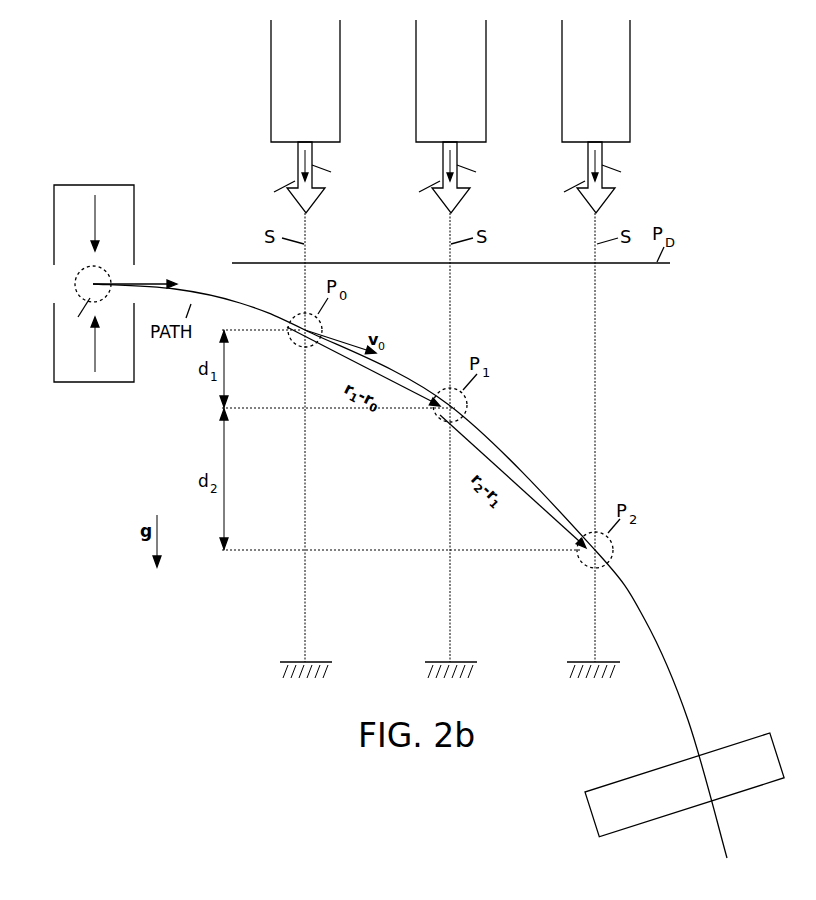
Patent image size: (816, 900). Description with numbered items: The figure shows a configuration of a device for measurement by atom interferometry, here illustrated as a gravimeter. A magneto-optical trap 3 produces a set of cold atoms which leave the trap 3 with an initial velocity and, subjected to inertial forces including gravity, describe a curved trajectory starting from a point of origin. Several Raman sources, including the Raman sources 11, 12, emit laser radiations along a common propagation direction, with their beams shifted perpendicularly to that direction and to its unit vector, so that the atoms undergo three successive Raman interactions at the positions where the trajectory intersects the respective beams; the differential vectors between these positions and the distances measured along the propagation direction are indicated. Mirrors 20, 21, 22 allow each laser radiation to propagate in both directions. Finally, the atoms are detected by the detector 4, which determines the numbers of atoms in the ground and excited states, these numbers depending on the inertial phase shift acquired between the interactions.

The Raman source 11 is at (487, 44).
The Raman source 12 is at (631, 44).
The mirror 20 is at (291, 660).
The mirror 21 is at (466, 660).
The mirror 22 is at (576, 661).
The magneto-optical trap 3 is at (115, 263).
The detector 4 is at (612, 784).